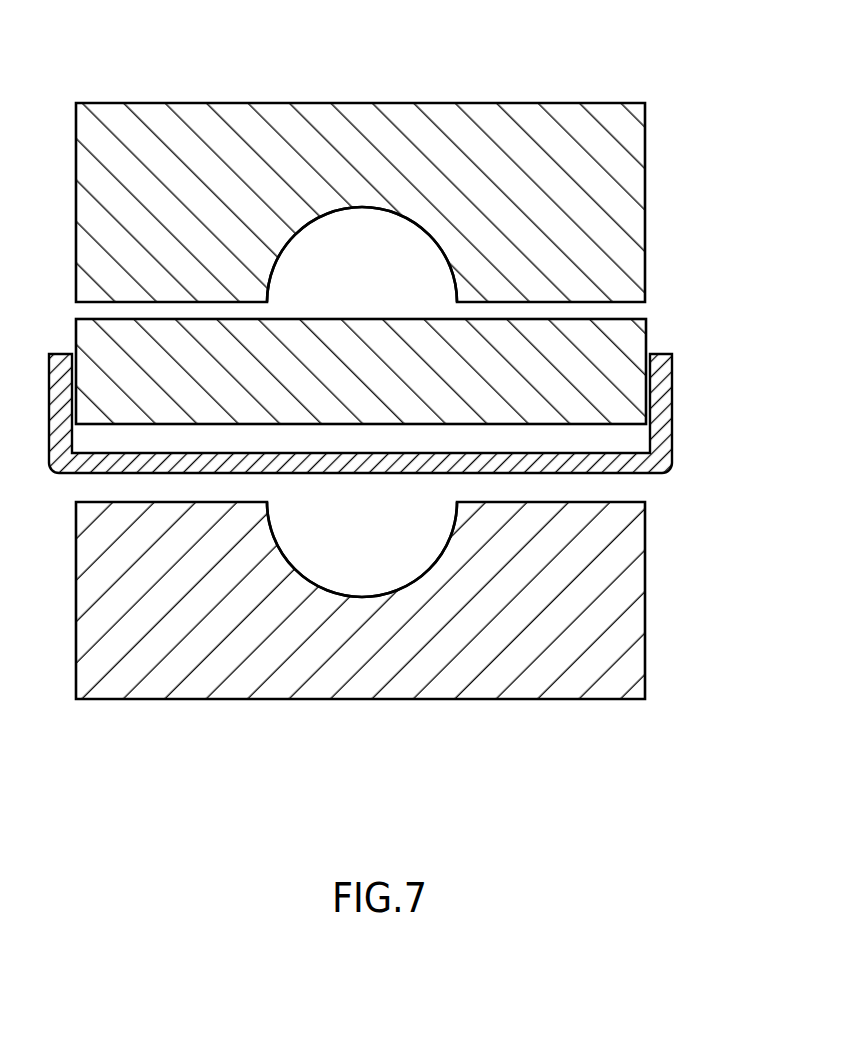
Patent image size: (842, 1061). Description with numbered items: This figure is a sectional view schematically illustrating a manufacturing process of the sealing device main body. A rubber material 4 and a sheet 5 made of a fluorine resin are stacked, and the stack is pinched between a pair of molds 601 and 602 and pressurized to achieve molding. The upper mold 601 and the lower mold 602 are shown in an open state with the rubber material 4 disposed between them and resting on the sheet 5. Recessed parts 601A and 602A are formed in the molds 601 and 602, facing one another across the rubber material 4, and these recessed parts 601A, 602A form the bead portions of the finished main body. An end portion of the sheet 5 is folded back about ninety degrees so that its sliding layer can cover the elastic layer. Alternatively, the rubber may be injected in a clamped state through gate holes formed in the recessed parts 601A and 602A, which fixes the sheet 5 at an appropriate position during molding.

The mold 601 is at (490, 120).
The recessed part 601A is at (398, 217).
The rubber material 4 is at (628, 340).
The sheet 5 is at (655, 462).
The mold 602 is at (490, 690).
The recessed part 602A is at (330, 588).